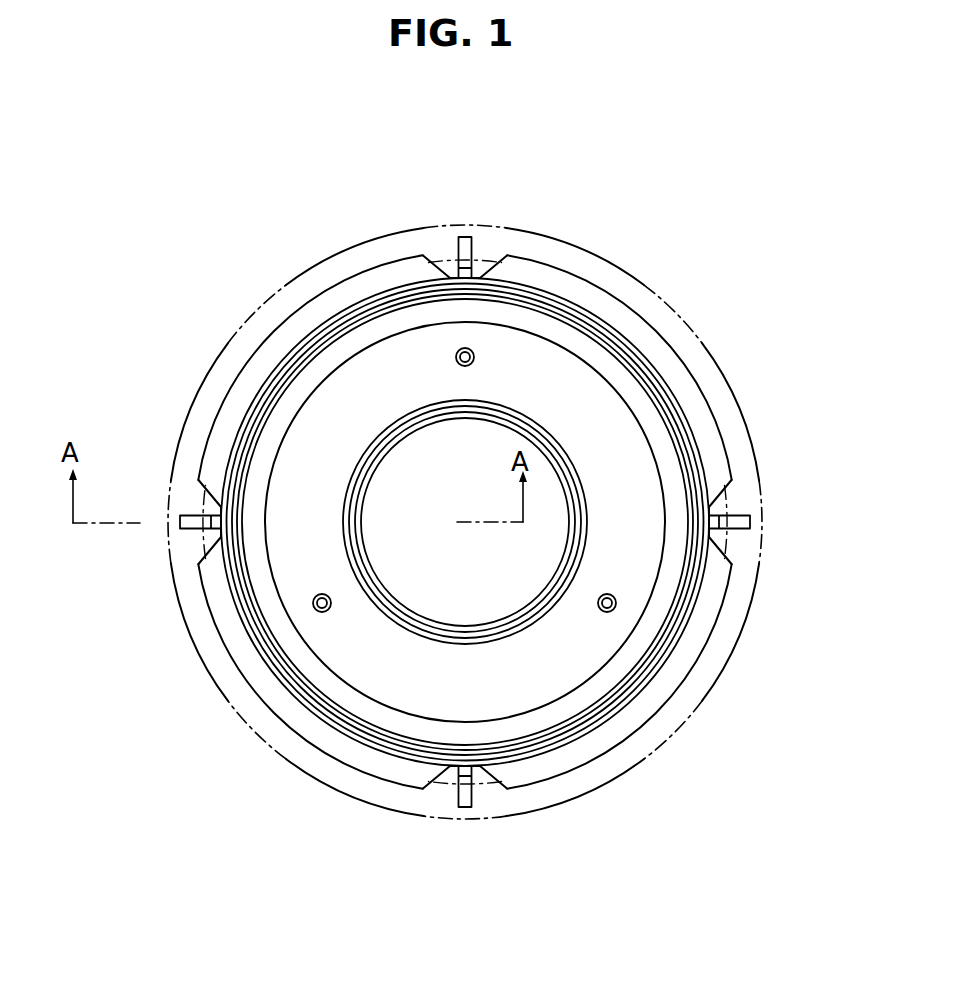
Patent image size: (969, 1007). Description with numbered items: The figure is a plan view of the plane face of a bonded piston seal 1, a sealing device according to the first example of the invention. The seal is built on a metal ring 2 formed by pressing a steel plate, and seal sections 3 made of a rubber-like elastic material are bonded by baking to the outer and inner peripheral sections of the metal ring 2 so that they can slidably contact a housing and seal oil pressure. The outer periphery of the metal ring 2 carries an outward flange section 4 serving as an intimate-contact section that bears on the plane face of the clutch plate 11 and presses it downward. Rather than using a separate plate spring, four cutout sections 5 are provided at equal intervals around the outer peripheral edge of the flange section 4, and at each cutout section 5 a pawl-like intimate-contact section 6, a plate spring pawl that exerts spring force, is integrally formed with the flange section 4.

The bonded piston seal 1 is at (600, 291).
The metal ring 2 is at (367, 380).
The seal sections 3 is at (385, 602).
The outward flange section 4 is at (290, 398).
The cutout sections 5 is at (450, 276).
The pawl-like intimate-contact sections 6 is at (466, 238).
The clutch plate 11 is at (673, 710).